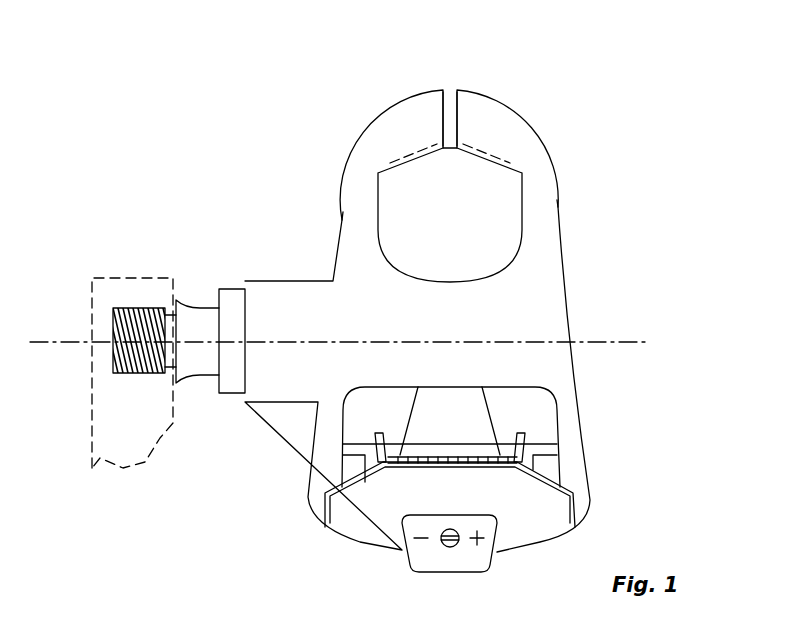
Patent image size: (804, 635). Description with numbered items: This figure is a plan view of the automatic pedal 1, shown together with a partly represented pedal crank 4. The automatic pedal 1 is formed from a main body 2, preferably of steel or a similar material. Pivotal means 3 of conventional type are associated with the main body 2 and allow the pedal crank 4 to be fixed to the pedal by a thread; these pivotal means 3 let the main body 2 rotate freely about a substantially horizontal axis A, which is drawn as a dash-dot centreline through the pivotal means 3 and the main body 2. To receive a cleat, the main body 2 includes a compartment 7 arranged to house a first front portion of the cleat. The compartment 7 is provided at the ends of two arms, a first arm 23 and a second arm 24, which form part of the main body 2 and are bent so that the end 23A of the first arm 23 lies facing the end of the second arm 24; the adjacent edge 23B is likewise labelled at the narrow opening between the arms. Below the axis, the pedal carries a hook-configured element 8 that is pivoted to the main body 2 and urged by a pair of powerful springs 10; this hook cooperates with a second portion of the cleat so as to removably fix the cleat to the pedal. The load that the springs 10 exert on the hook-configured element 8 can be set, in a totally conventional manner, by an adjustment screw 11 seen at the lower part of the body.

The automatic pedal 1 is at (600, 104).
The main body 2 is at (547, 293).
The pivotal means 3 is at (230, 276).
The pedal crank 4 is at (92, 290).
The compartment 7 is at (488, 168).
The hook-configured element 8 is at (518, 523).
The springs 10 is at (487, 457).
The adjustment screw 11 is at (452, 550).
The first arm 23 is at (355, 213).
The end of the first arm 23A is at (443, 95).
The slot edge 23B is at (453, 108).
The second arm 24 is at (543, 203).
The horizontal axis A is at (645, 342).